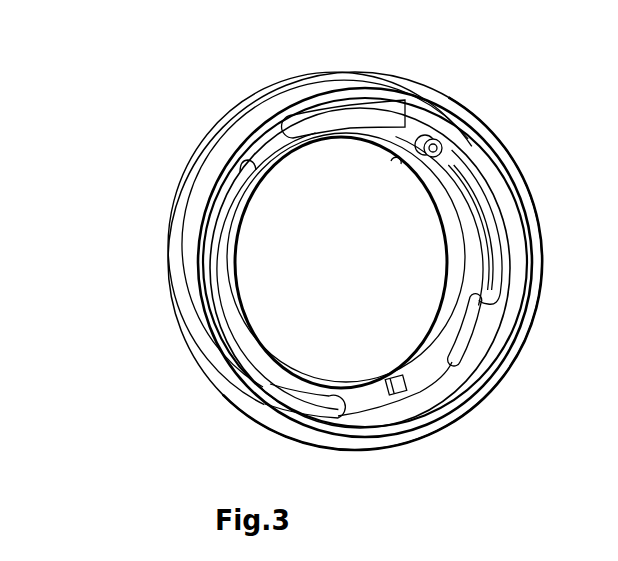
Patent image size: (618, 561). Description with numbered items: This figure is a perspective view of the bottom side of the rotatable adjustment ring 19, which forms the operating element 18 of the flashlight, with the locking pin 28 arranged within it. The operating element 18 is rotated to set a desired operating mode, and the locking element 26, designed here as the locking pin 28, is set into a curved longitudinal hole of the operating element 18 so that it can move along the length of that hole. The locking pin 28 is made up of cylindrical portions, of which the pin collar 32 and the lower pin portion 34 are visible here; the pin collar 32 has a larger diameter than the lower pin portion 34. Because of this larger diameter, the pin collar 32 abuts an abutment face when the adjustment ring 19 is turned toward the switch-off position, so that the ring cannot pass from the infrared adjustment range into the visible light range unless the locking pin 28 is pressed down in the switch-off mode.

The operating element 18 is at (306, 232).
The rotatable adjustment ring 19 is at (180, 232).
The locking element 26 is at (468, 150).
The locking pin 28 is at (429, 118).
The pin collar 32 is at (425, 135).
The lower pin portion 34 is at (442, 148).